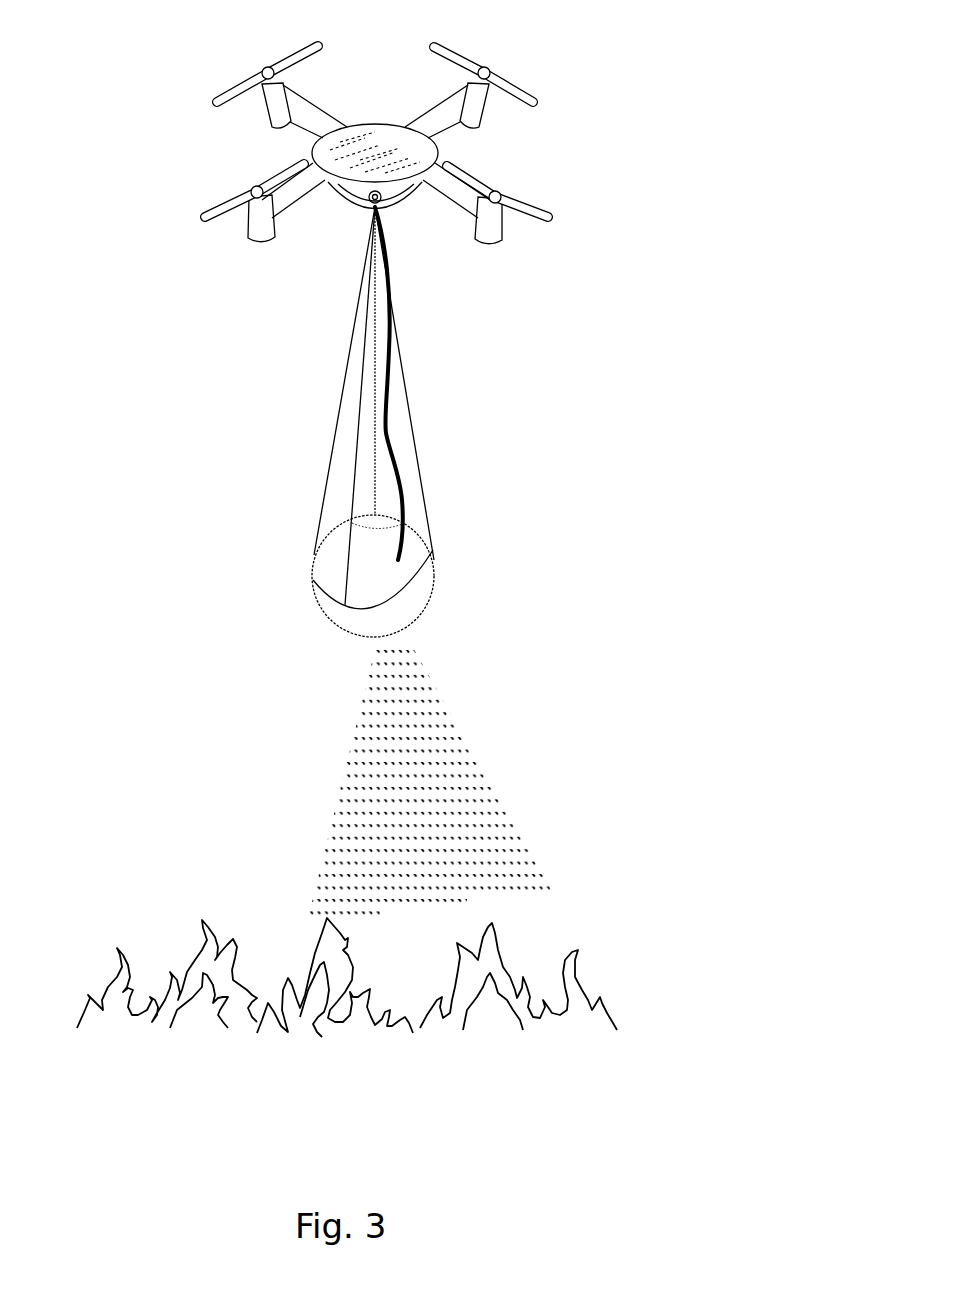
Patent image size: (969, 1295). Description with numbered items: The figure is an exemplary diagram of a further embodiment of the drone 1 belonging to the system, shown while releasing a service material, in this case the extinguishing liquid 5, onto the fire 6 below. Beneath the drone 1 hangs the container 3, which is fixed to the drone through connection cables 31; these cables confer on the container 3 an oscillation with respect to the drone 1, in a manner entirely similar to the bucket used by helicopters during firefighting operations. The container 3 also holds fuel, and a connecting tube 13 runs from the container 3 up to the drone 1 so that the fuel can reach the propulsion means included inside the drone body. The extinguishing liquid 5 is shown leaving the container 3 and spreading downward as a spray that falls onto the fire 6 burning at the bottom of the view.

The drone 1 is at (390, 131).
The container 3 is at (435, 610).
The extinguishing liquid 5 is at (470, 735).
The fire 6 is at (185, 910).
The connecting tube 13 is at (403, 468).
The connection cables 31 is at (326, 434).